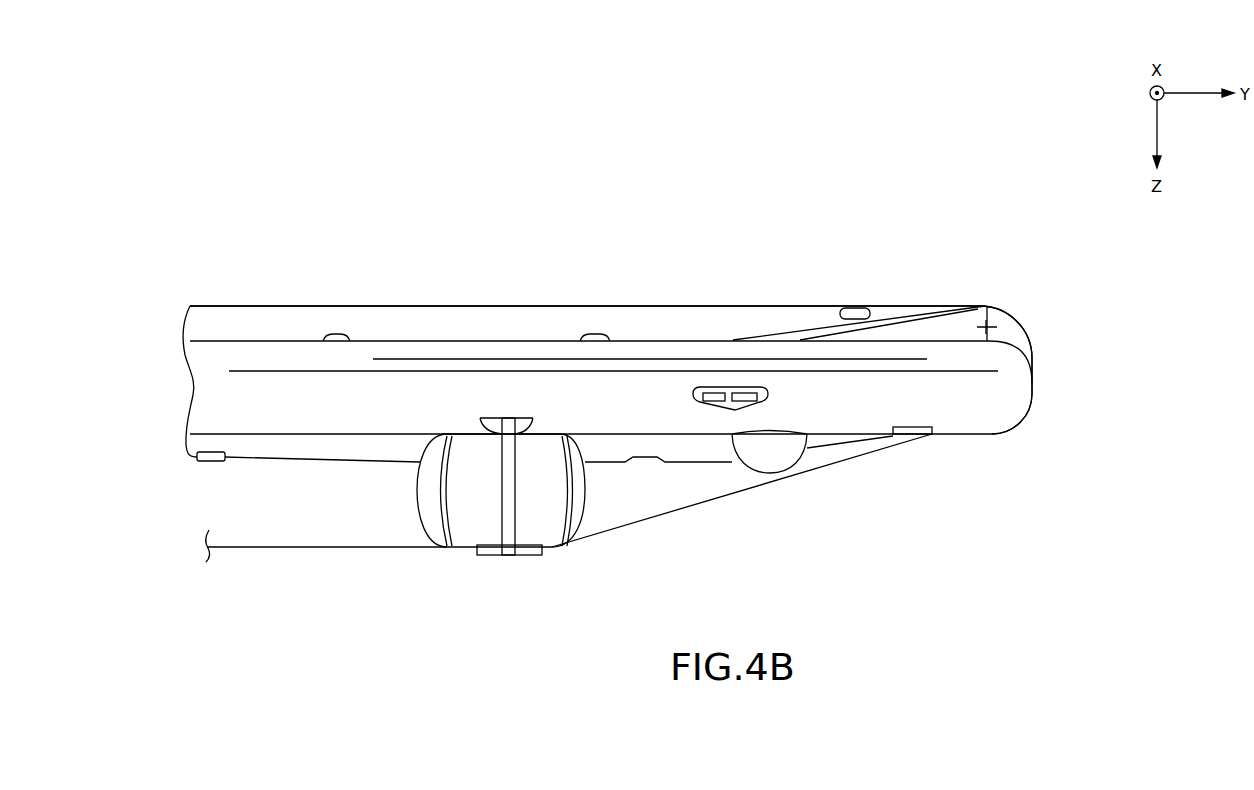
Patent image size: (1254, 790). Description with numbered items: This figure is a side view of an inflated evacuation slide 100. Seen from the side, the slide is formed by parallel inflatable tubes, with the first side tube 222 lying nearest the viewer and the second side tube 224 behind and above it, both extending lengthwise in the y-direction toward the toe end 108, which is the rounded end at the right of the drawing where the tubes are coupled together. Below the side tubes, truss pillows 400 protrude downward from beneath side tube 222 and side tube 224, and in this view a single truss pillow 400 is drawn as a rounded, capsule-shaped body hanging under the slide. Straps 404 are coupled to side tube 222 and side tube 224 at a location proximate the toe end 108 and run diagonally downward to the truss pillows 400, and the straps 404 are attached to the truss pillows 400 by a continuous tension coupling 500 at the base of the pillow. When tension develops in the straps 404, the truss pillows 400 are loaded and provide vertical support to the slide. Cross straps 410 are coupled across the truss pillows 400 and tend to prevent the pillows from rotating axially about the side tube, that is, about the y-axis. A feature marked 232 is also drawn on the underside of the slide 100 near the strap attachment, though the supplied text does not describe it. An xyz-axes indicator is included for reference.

The evacuation slide 100 is at (930, 225).
The toe end 108 is at (1052, 402).
The side tube 222 is at (864, 407).
The side tube 224 is at (515, 305).
The protrusion 232 is at (776, 459).
The truss pillows 400 is at (547, 477).
The straps 404 is at (716, 500).
The cross straps 410 is at (508, 488).
The continuous tension coupling 500 is at (483, 556).